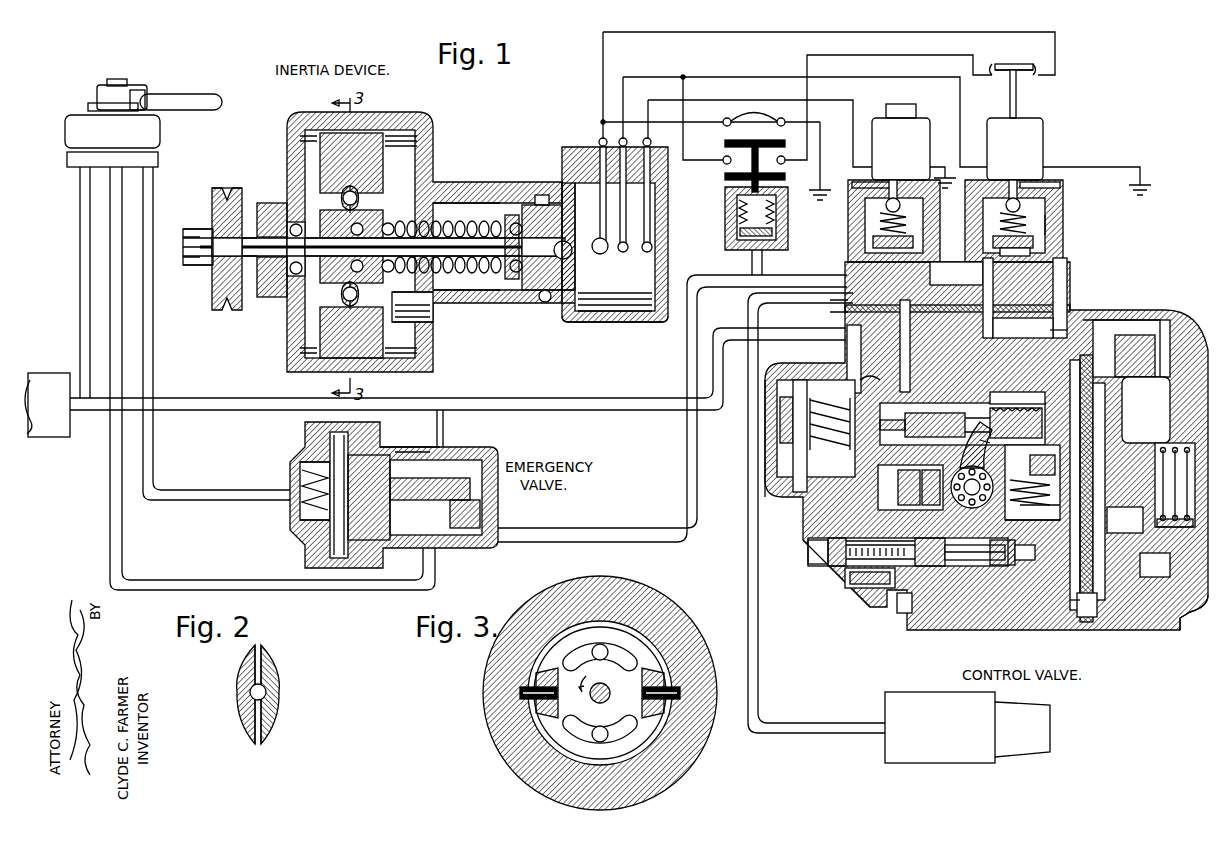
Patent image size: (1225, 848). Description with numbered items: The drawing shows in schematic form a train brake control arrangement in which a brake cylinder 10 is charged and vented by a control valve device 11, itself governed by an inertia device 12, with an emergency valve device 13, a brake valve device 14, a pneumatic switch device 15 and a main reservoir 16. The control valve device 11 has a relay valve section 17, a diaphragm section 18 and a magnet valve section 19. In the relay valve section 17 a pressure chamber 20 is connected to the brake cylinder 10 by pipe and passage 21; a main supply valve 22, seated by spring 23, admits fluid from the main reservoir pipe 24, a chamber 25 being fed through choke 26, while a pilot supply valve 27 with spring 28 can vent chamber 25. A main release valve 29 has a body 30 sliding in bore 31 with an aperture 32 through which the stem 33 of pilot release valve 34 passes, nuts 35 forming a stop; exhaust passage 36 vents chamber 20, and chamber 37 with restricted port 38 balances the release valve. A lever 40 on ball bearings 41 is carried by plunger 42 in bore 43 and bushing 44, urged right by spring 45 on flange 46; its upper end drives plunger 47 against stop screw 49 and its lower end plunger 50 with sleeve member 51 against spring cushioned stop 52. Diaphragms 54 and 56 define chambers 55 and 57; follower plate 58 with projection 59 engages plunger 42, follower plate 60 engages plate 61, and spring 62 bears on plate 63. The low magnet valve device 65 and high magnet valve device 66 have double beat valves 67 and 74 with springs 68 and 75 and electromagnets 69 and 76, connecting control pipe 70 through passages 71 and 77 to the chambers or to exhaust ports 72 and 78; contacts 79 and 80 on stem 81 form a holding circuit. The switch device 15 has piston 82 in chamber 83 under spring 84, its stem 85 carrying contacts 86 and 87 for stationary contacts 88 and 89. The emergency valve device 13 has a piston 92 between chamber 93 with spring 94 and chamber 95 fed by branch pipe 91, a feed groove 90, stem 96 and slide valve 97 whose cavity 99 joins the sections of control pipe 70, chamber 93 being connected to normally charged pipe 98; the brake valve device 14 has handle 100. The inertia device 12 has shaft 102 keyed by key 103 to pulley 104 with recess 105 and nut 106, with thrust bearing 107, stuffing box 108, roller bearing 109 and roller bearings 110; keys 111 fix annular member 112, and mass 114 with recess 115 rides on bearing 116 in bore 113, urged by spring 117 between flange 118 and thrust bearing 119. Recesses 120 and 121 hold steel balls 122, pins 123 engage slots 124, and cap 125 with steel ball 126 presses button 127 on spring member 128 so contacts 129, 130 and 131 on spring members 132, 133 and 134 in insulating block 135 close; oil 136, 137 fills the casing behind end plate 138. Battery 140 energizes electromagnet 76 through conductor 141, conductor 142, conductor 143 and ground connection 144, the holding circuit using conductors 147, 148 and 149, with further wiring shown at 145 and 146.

In FIG. 1, the brake cylinder 10 is at (892, 700).
In FIG. 1, the control valve device 11 is at (1038, 632).
In FIG. 1, the inertia device 12 is at (431, 115).
In FIG. 1, the emergency valve device 13 is at (470, 447).
In FIG. 1, the brake valve device 14 is at (161, 138).
In FIG. 1, the pneumatic switch device 15 is at (724, 207).
In FIG. 1, the main reservoir 16 is at (54, 433).
In FIG. 1, the relay valve section 17 is at (823, 577).
In FIG. 1, the diaphragm section 18 is at (1190, 613).
In FIG. 1, the magnet valve section 19 is at (1065, 225).
In FIG. 1, the pressure chamber 20 is at (968, 404).
In FIG. 1, the pipe and passage 21 is at (852, 303).
In FIG. 1, the main supply valve 22 is at (877, 377).
In FIG. 1, the spring 23 is at (822, 387).
In FIG. 1, the main reservoir pipe 24 is at (79, 209).
In FIG. 1, the chamber 25 is at (770, 453).
In FIG. 1, the choke or restriction 26 is at (816, 490).
In FIG. 1, the pilot supply valve 27 is at (896, 444).
In FIG. 1, the spring 28 is at (790, 425).
In FIG. 1, the main release valve 29 is at (930, 570).
In FIG. 1, the elongated body 30 is at (870, 563).
In FIG. 1, the bore 31 is at (870, 542).
In FIG. 1, the aperture 32 is at (882, 543).
In FIG. 1, the stem 33 is at (874, 543).
In FIG. 1, the pilot release valve 34 is at (918, 538).
In FIG. 1, the nuts 35 is at (822, 551).
In FIG. 1, the exhaust passage 36 is at (903, 614).
In FIG. 1, the chamber 37 is at (820, 567).
In FIG. 1, the restricted port 38 is at (842, 573).
In FIG. 1, the lever 40 is at (966, 456).
In FIG. 1, the ball bearings 41 is at (980, 445).
In FIG. 1, the plunger 42 is at (958, 500).
In FIG. 1, the bore 43 is at (899, 470).
In FIG. 1, the bushing 44 is at (1033, 420).
In FIG. 1, the spring 45 is at (1030, 552).
In FIG. 1, the flange 46 is at (1037, 453).
In FIG. 1, the plunger 47 is at (936, 411).
In FIG. 1, the adjustable stop screw 49 is at (993, 404).
In FIG. 1, the plunger 50 is at (967, 562).
In FIG. 1, the sleeve member 51 is at (946, 570).
In FIG. 1, the spring cushioned stop 52 is at (1001, 607).
In FIG. 1, the diaphragm 54 is at (1092, 370).
In FIG. 1, the pressure chamber 55 is at (1108, 367).
In FIG. 1, the diaphragm 56 is at (1157, 367).
In FIG. 1, the pressure chamber 57 is at (1172, 387).
In FIG. 1, the follower plate 58 is at (1078, 613).
In FIG. 1, the projection 59 is at (1057, 507).
In FIG. 1, the follower plate 60 is at (1143, 557).
In FIG. 1, the plate 61 is at (1140, 572).
In FIG. 1, the spring 62 is at (1175, 445).
In FIG. 1, the plate 63 is at (1157, 399).
In FIG. 1, the low magnet valve device 65 is at (923, 116).
In FIG. 1, the high magnet valve device 66 is at (1047, 118).
In FIG. 1, the double beat valve 67 is at (887, 204).
In FIG. 1, the spring 68 is at (941, 327).
In FIG. 1, the electromagnet / passage 69 is at (880, 118).
In FIG. 1, the control pipe 70 is at (200, 571).
In FIG. 1, the passage 71 is at (1025, 298).
In FIG. 1, the exhaust port 72 is at (853, 194).
In FIG. 1, the double beat valve 74 is at (1053, 203).
In FIG. 1, the spring 75 is at (1037, 251).
In FIG. 1, the electromagnet 76 is at (1045, 143).
In FIG. 1, the passage 77 is at (1045, 340).
In FIG. 1, the exhaust port 78 is at (1048, 189).
In FIG. 1, the stationary contacts 79 is at (1033, 70).
In FIG. 1, the movable contact 80 is at (1005, 72).
In FIG. 1, the stem 81 is at (1018, 100).
In FIG. 1, the piston 82 is at (738, 232).
In FIG. 1, the chamber 83 is at (750, 265).
In FIG. 1, the spring 84 is at (778, 198).
In FIG. 1, the stem 85 is at (737, 200).
In FIG. 1, the contact member 86 is at (775, 137).
In FIG. 1, the contact member 87 is at (758, 162).
In FIG. 1, the stationary contact 88 is at (753, 118).
In FIG. 1, the stationary contact 89 is at (780, 159).
In FIG. 1, the feed groove 90 is at (388, 443).
In FIG. 1, the branch pipe 91 is at (445, 443).
In FIG. 1, the piston 92 is at (412, 447).
In FIG. 1, the chamber 93 is at (306, 440).
In FIG. 1, the biasing spring 94 is at (300, 478).
In FIG. 1, the chamber 95 is at (395, 462).
In FIG. 1, the stem 96 is at (497, 450).
In FIG. 1, the slide valve 97 is at (496, 515).
In FIG. 1, the normally charged pipe 98 is at (199, 489).
In FIG. 1, the cavity 99 is at (369, 497).
In FIG. 1, the operating handle 100 is at (186, 93).
In FIG. 1, the shaft 102 is at (282, 205).
In FIG. 3, the shaft 102 is at (595, 704).
In FIG. 1, the key 103 is at (214, 268).
In FIG. 1, the driving pulley 104 is at (212, 195).
In FIG. 1, the annular recess 105 is at (227, 190).
In FIG. 1, the nut 106 is at (201, 230).
In FIG. 1, the thrust roller bearing 107 is at (241, 300).
In FIG. 1, the stuffing box 108 is at (262, 210).
In FIG. 1, the roller bearing 109 is at (274, 300).
In FIG. 1, the roller bearings 110 is at (390, 222).
In FIG. 1, the keys 111 is at (303, 250).
In FIG. 1, the annular member 112 is at (355, 190).
In FIG. 2, the annular member 112 is at (249, 667).
In FIG. 3, the annular member 112 is at (640, 652).
In FIG. 1, the bore 113 is at (540, 305).
In FIG. 1, the mass 114 is at (382, 167).
In FIG. 2, the mass 114 is at (273, 666).
In FIG. 3, the mass 114 is at (642, 604).
In FIG. 1, the recess 115 is at (366, 180).
In FIG. 1, the roller bearing 116 is at (540, 197).
In FIG. 1, the spring 117 is at (462, 218).
In FIG. 1, the flange 118 is at (507, 275).
In FIG. 1, the thrust bearing 119 is at (424, 192).
In FIG. 1, the dished recesses 120 is at (345, 208).
In FIG. 2, the dished recesses 120 is at (243, 713).
In FIG. 3, the dished recesses 120 is at (536, 603).
In FIG. 1, the recesses 121 is at (372, 196).
In FIG. 2, the recesses 121 is at (281, 714).
In FIG. 1, the steel balls 122 is at (350, 246).
In FIG. 2, the steel balls 122 is at (279, 690).
In FIG. 3, the steel balls 122 is at (597, 646).
In FIG. 3, the pins 123 is at (522, 696).
In FIG. 3, the slots 124 is at (528, 668).
In FIG. 1, the cap 125 is at (571, 312).
In FIG. 1, the steel ball 126 is at (551, 278).
In FIG. 1, the button 127 is at (553, 239).
In FIG. 1, the spring member 128 is at (572, 190).
In FIG. 1, the contact 129 is at (596, 255).
In FIG. 1, the contact 130 is at (621, 253).
In FIG. 1, the contact 131 is at (646, 253).
In FIG. 1, the spring member 132 is at (612, 215).
In FIG. 1, the spring member 133 is at (592, 199).
In FIG. 1, the spring member 134 is at (648, 228).
In FIG. 1, the insulating block 135 is at (592, 147).
In FIG. 1, the oil 136 is at (412, 341).
In FIG. 1, the oil 137 is at (614, 312).
In FIG. 1, the end plate 138 is at (663, 322).
In FIG. 1, the battery 140 is at (822, 186).
In FIG. 1, the conductor 141 is at (821, 127).
In FIG. 1, the conductor 142 is at (711, 112).
In FIG. 1, the conductor 143 is at (724, 76).
In FIG. 1, the ground connection 144 is at (1126, 151).
In FIG. 1, the wire 145 is at (728, 100).
In FIG. 1, the ground 146 is at (941, 167).
In FIG. 1, the conductor 147 is at (718, 32).
In FIG. 1, the conductor 148 is at (836, 56).
In FIG. 1, the conductor 149 is at (683, 77).